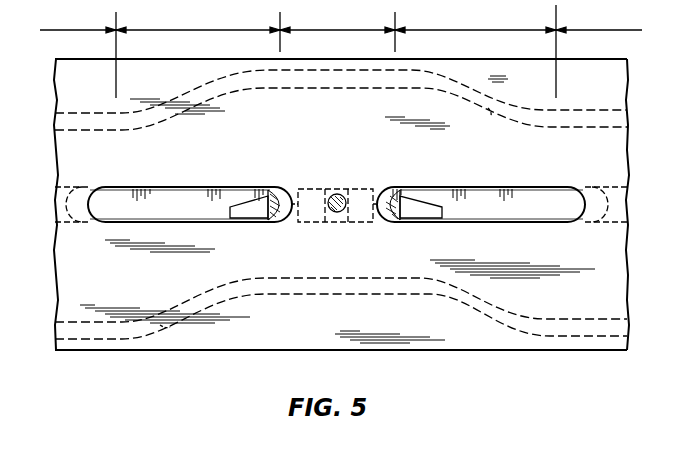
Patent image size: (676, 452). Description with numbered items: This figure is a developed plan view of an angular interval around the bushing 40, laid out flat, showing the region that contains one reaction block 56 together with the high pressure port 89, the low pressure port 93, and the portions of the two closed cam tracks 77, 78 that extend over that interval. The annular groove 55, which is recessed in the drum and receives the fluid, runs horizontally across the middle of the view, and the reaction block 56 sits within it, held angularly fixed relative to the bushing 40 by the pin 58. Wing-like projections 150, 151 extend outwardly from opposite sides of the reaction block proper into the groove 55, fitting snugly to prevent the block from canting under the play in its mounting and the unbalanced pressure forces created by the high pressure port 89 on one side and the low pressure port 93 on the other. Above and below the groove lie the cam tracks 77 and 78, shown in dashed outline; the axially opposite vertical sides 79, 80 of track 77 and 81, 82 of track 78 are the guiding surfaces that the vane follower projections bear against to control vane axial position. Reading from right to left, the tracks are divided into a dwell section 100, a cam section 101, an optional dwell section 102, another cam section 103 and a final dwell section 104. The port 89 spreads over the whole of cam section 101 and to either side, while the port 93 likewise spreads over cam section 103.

The bushing 40 is at (58, 158).
The annular groove 55 is at (538, 188).
The reaction block 56 is at (361, 190).
The pin 58 is at (337, 214).
The cam track 77 is at (447, 88).
The cam track 78 is at (222, 307).
The vertical side of track 77 79 is at (503, 101).
The vertical side of track 77 80 is at (491, 112).
The vertical side of track 78 81 is at (175, 306).
The vertical side of track 78 82 is at (166, 328).
The high pressure port 89 is at (505, 210).
The low pressure port 93 is at (172, 196).
The dwell section 100 is at (591, 32).
The cam section 101 is at (458, 32).
The dwell section 102 is at (337, 32).
The cam section 103 is at (209, 32).
The dwell section 104 is at (58, 32).
The wing-like projection 150 is at (250, 213).
The wing-like projection 151 is at (428, 210).